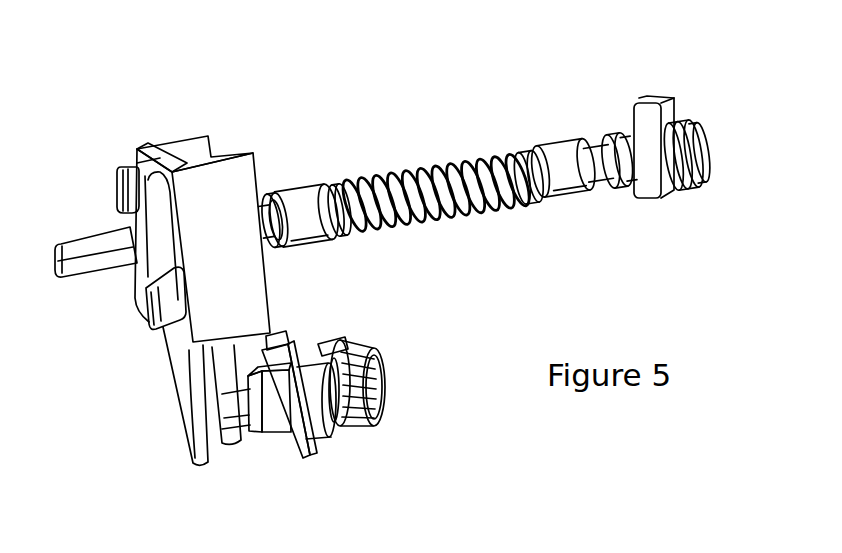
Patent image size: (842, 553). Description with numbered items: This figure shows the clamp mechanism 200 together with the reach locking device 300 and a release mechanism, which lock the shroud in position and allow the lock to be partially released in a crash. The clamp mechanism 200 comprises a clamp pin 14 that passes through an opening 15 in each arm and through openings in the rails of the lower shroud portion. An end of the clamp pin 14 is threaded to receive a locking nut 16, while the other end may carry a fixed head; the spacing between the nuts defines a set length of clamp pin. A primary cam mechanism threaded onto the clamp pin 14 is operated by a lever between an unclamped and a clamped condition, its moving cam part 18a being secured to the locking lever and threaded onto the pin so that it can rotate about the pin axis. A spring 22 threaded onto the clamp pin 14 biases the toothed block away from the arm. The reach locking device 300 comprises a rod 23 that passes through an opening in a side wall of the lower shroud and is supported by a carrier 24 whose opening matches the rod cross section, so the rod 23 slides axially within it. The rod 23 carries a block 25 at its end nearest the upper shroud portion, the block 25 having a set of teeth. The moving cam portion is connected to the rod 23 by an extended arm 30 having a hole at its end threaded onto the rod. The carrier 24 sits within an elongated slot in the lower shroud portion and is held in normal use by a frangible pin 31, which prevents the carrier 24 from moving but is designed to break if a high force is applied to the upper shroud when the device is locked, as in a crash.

The moving cam part 18a is at (140, 148).
The clamp mechanism 200 is at (420, 143).
The spring 22 is at (478, 212).
The clamp pin 14 is at (603, 172).
The opening 15 is at (655, 102).
The locking nut 16 is at (700, 180).
The extended arm 30 is at (229, 434).
The reach locking device 300 is at (356, 452).
The rod 23 is at (246, 432).
The frangible pin 31 is at (296, 425).
The carrier 24 is at (282, 430).
The block 25 is at (357, 347).